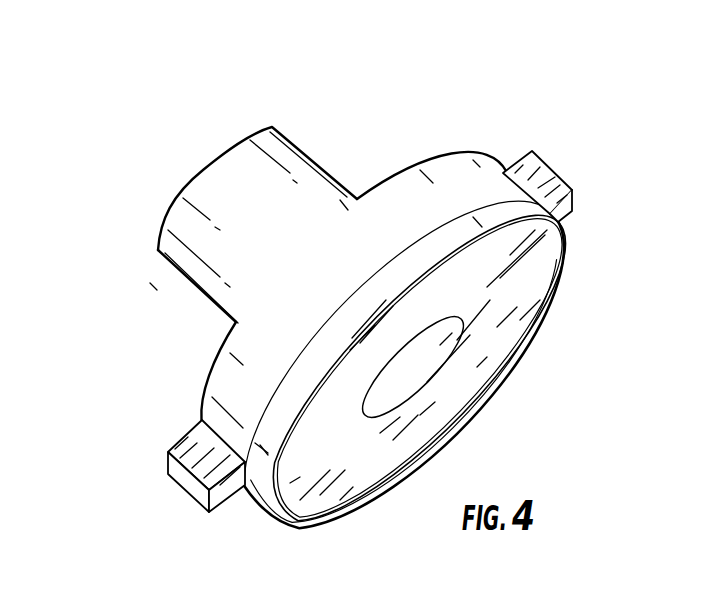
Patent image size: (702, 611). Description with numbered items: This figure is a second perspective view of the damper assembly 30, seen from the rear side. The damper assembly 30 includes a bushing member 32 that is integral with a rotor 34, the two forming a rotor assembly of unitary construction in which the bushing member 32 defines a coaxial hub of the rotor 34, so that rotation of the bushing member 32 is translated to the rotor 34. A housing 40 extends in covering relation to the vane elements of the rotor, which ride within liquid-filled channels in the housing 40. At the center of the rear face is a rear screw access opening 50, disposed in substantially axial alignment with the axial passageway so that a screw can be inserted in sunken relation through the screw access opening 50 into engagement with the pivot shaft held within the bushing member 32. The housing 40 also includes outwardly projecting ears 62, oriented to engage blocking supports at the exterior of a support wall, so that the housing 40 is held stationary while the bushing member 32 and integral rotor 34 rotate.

The damper assembly 30 is at (372, 147).
The bushing member 32 is at (317, 160).
The rotor 34 is at (500, 329).
The housing 40 is at (230, 388).
The rear screw access opening 50 is at (410, 377).
The ears 62 is at (180, 474).